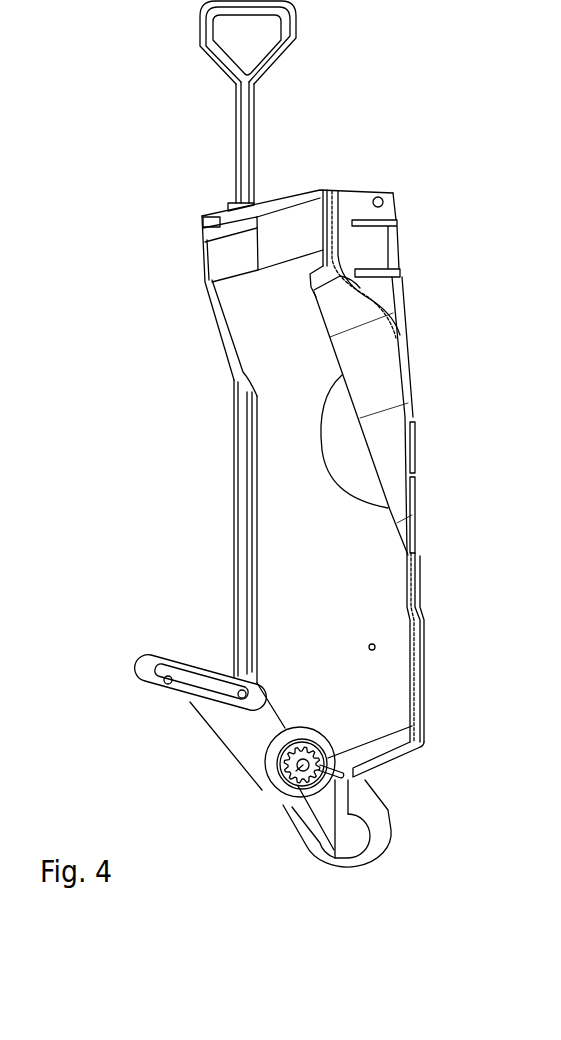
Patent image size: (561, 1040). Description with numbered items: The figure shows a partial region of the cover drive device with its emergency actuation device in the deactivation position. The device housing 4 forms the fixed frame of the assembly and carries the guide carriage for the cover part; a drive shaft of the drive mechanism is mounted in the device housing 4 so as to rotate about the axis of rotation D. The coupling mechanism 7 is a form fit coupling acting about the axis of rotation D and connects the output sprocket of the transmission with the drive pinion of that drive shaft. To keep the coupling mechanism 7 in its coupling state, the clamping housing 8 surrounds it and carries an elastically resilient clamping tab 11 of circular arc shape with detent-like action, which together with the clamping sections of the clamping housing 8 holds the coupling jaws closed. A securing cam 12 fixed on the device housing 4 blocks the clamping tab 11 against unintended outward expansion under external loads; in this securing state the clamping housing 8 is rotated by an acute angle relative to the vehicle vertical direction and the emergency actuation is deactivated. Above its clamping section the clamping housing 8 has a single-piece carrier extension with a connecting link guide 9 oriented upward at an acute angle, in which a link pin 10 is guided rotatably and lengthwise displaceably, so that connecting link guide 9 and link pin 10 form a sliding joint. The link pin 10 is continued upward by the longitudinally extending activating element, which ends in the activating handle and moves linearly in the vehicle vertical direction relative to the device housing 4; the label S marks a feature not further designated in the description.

The device housing 4 is at (398, 602).
The strut / telescopic tube S is at (234, 464).
The coupling mechanism 7 is at (312, 740).
The clamping housing 8 is at (282, 805).
The connecting link guide 9 is at (168, 683).
The link pin 10 is at (240, 689).
The clamping tab 11 is at (342, 768).
The securing cam 12 is at (342, 752).
The axis of rotation D is at (282, 787).